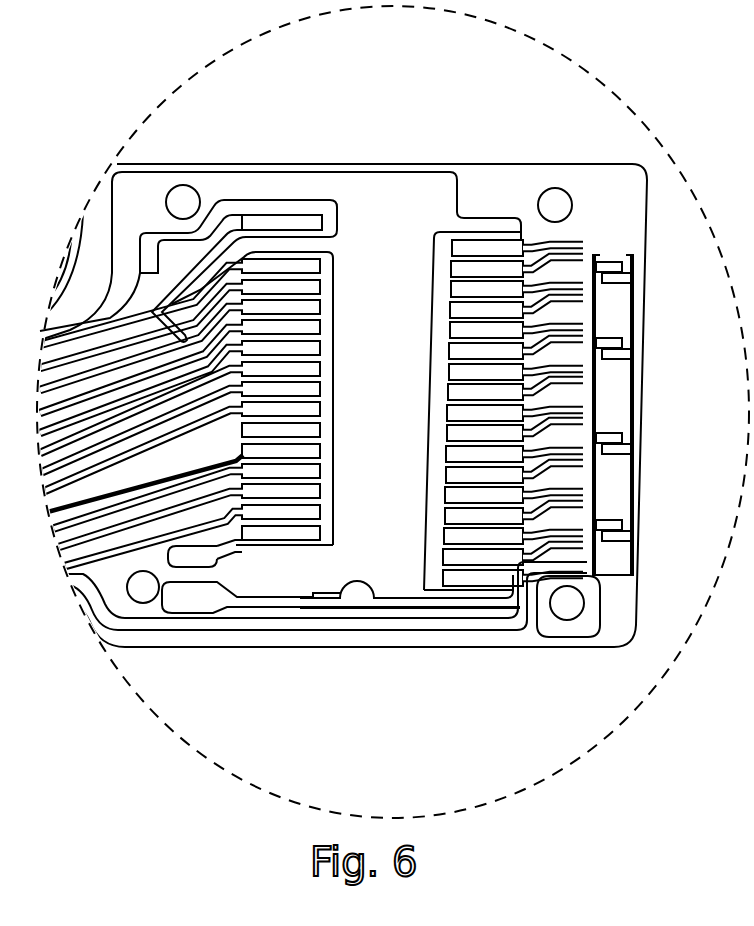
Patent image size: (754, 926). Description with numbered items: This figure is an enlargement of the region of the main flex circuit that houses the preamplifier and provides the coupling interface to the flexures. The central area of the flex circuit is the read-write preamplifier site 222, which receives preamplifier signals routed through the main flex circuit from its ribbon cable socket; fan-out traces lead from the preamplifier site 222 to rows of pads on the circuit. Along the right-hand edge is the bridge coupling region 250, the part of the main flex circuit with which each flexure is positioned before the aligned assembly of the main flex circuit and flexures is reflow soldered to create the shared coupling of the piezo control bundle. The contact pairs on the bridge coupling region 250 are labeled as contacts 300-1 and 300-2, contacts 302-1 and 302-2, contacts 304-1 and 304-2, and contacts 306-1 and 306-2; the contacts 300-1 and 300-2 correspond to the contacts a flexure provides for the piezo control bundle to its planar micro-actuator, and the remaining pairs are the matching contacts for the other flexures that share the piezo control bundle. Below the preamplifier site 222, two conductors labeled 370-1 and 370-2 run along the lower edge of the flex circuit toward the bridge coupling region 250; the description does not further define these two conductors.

The read-write preamplifier site 222 is at (520, 140).
The bridge coupling region 250 is at (637, 222).
The contact for the piezo control bundle to the planar micro-actuator 300-1 is at (600, 280).
The contact for the piezo control bundle to the planar micro-actuator 300-2 is at (608, 282).
The contact 302-1 is at (612, 368).
The contact 302-2 is at (598, 362).
The contact 304-1 is at (598, 456).
The contact 304-2 is at (614, 458).
The contact 306-1 is at (612, 547).
The contact 306-2 is at (597, 570).
The trace 370-1 is at (158, 618).
The trace 370-2 is at (475, 636).